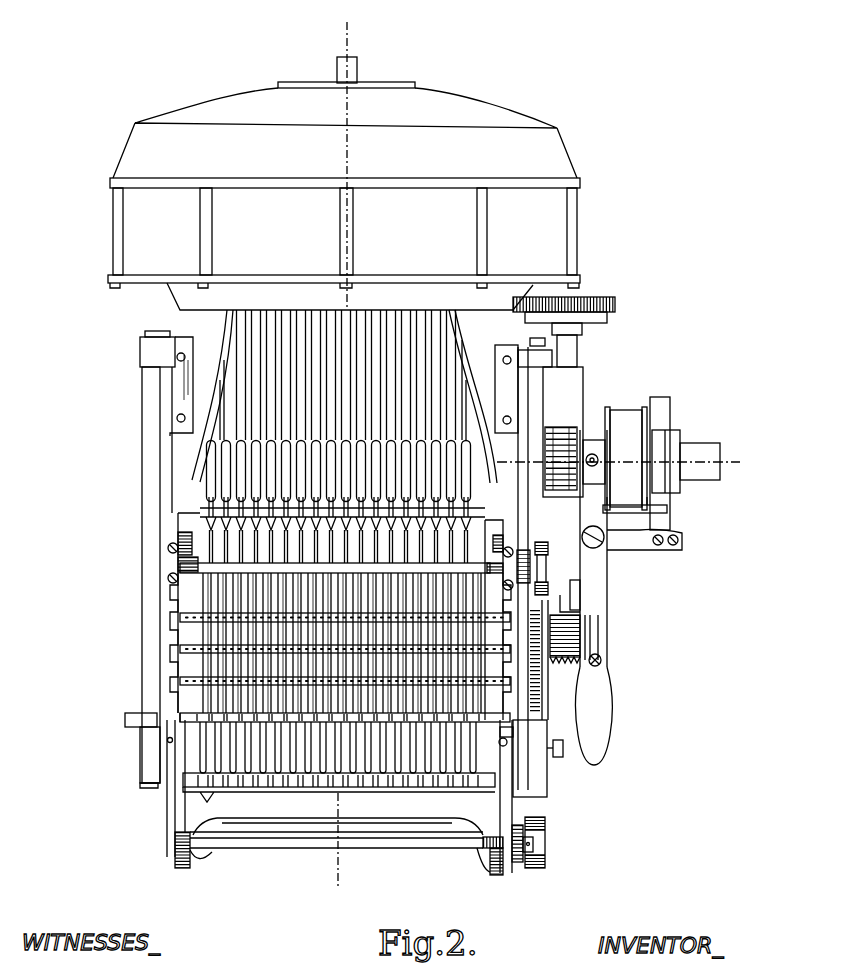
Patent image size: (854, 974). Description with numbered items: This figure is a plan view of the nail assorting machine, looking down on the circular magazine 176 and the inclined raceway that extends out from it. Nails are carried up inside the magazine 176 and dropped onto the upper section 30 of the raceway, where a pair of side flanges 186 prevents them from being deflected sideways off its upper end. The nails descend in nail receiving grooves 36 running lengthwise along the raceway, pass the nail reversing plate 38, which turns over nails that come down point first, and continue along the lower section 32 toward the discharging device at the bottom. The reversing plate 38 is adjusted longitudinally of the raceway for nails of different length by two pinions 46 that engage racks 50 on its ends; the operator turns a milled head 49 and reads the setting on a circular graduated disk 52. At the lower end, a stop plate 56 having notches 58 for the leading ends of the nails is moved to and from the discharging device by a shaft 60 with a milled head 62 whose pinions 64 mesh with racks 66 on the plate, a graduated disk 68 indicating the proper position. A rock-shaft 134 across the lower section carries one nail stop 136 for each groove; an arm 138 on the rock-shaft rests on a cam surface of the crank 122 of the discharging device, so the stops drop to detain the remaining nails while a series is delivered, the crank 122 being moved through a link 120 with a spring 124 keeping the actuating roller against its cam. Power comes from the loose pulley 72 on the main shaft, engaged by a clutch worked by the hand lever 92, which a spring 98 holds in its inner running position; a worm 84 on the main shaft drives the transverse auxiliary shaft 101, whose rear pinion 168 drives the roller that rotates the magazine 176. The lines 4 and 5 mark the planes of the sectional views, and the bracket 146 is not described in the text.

The line 5— 5 is at (343, 456).
The circular magazine 176 is at (437, 107).
The pinion 168 is at (603, 297).
The auxiliary shaft 101 is at (570, 348).
The loose pulley 72 is at (622, 415).
The worm 84 is at (580, 425).
The bracket 146 is at (660, 403).
The line 4— 4 is at (623, 462).
The side flanges 186 is at (213, 338).
The upper section of the raceway 30 is at (288, 382).
The nail receiving grooves 36 is at (218, 500).
The racks 50 is at (223, 535).
The nail reversing plate 38 is at (178, 532).
The pinions 46 is at (177, 598).
The lower section of the raceway 32 is at (225, 663).
The rock-shaft 134 is at (160, 720).
The nail stops 136 is at (217, 753).
The notches 58 is at (207, 800).
The pinions 64 is at (183, 838).
The racks 66 is at (185, 868).
The stop plate 56 is at (318, 805).
The shaft 60 is at (393, 840).
The graduated disk 68 is at (520, 863).
The milled head 62 is at (545, 838).
The hand lever 92 is at (593, 557).
The milled head 49 is at (548, 567).
The circular graduated disk 52 is at (580, 588).
The spring 98 is at (600, 658).
The link 120 is at (555, 658).
The spring 124 is at (537, 677).
The arm 138 is at (520, 743).
The crank 122 is at (527, 782).